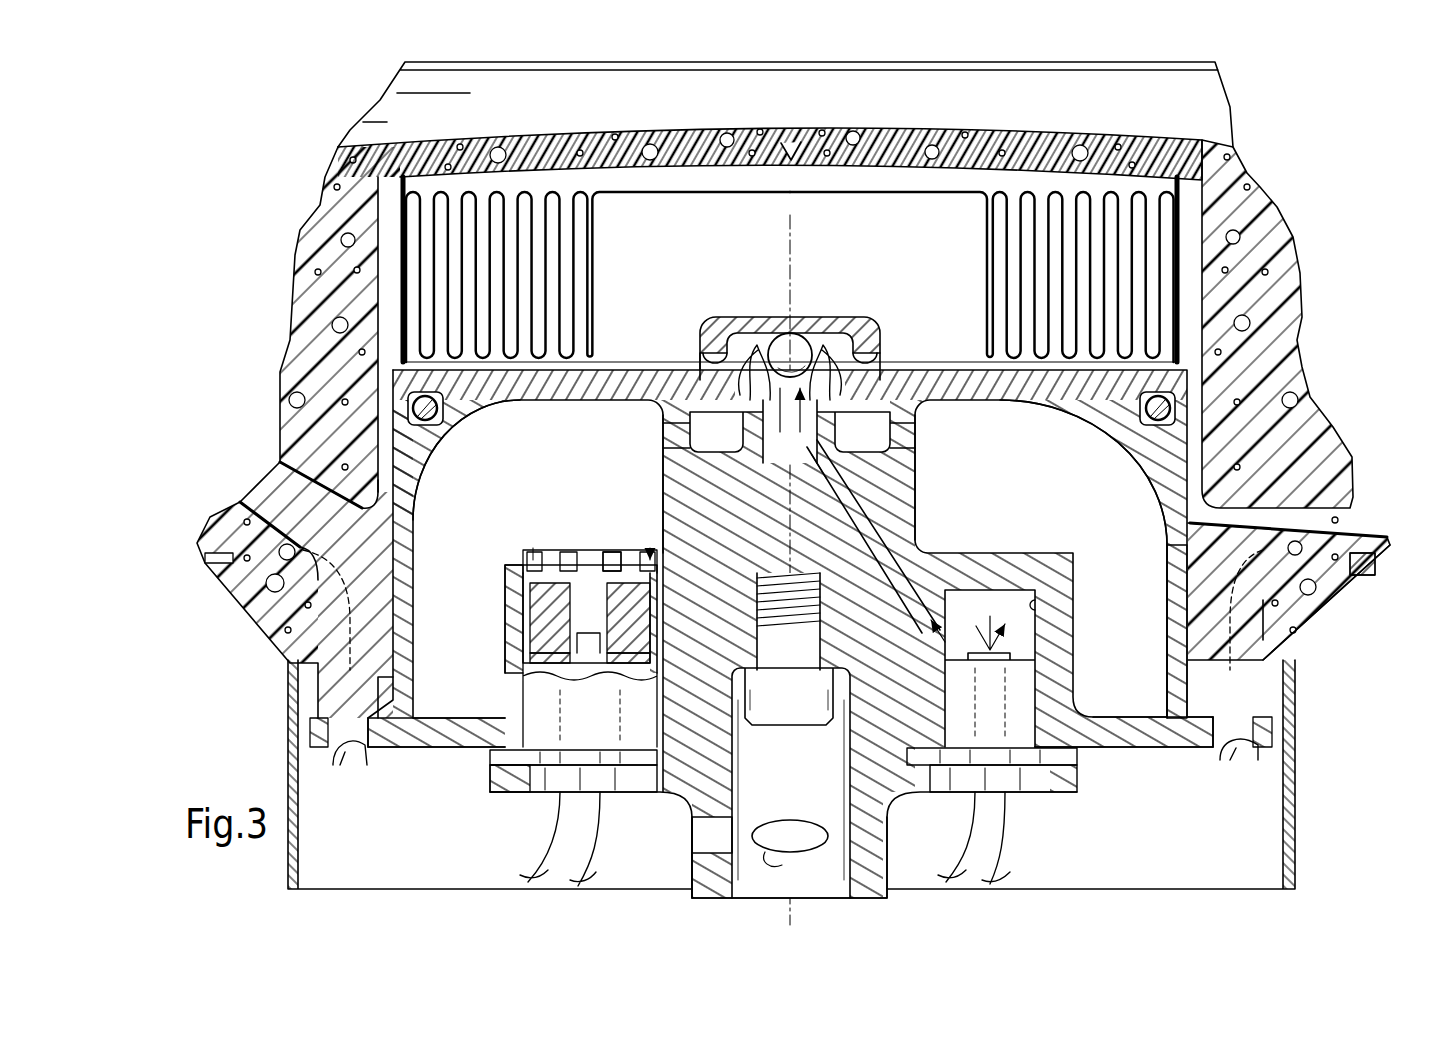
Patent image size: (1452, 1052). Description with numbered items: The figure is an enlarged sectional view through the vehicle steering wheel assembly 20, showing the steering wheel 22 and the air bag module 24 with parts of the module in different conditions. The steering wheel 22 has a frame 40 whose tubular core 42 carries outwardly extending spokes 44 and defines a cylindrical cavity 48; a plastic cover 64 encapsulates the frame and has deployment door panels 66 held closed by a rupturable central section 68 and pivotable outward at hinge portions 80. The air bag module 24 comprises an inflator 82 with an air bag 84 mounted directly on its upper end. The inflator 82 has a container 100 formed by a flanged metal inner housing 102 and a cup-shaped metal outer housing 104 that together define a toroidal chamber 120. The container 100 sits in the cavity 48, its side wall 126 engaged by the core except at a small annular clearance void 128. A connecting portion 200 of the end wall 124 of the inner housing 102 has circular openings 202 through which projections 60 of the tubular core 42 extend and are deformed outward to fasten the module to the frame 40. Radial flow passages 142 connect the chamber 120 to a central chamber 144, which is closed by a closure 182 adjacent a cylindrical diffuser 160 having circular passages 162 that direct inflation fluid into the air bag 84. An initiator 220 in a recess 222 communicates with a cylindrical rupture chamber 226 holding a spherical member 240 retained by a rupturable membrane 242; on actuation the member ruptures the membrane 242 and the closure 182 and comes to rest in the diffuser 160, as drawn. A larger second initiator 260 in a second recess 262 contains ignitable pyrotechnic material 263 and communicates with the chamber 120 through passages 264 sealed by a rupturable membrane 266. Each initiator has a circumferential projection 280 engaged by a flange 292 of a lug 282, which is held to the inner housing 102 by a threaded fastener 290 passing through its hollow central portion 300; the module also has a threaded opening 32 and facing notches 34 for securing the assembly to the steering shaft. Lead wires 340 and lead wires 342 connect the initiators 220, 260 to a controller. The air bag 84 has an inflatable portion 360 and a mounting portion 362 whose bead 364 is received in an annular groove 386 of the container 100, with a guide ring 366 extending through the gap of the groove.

The vehicle steering wheel assembly 20 is at (1312, 108).
The steering wheel 22 is at (1258, 180).
The air bag module 24 is at (1192, 358).
The threaded opening 32 is at (710, 850).
The facing notches 34 is at (768, 846).
The frame 40 is at (1270, 590).
The tubular core 42 is at (1215, 640).
The spokes 44 is at (283, 495).
The cylindrical cavity 48 is at (390, 485).
The projections 60 is at (330, 755).
The plastic cover 64 is at (315, 212).
The deployment door panels 66 is at (650, 135).
The rupturable central section 68 is at (797, 148).
The hinge portions 80 is at (385, 150).
The inflator 82 is at (1190, 525).
The inflatable vehicle occupant protection device 84 is at (1180, 257).
The container 100 is at (385, 705).
The flanged metal inner housing 102 is at (1113, 750).
The cup-shaped metal outer housing 104 is at (1192, 452).
The toroidal shaped chamber 120 is at (1045, 526).
The end wall 124 is at (440, 740).
The side wall 126 is at (1372, 562).
The annular clearance void 128 is at (1193, 693).
The radially extending flow passages 142 is at (680, 450).
The central chamber 144 is at (720, 425).
The cylindrical shaped diffuser 160 is at (830, 330).
The circular passages 162 is at (710, 342).
The closure 182 is at (762, 335).
The connecting portion 200 is at (1272, 733).
The circular openings 202 is at (367, 727).
The actuatable initiator 220 is at (1038, 685).
The recess 222 is at (1037, 607).
The cylindrical rupture chamber 226 is at (780, 447).
The spherical member 240 is at (793, 350).
The rupturable membrane 242 is at (880, 410).
The second actuatable initiator 260 is at (520, 680).
The second recess 262 is at (516, 565).
The ignitable pyrotechnic material 263 is at (548, 615).
The passages 264 is at (553, 553).
The rupturable membrane 266 is at (600, 552).
The projection 280 is at (527, 753).
The lug 282 is at (692, 862).
The threaded fastener 290 is at (775, 700).
The flange 292 is at (500, 780).
The hollow central portion 300 is at (840, 860).
The lead wires 340 is at (983, 858).
The lead wires 342 is at (558, 890).
The inflatable portion 360 is at (405, 257).
The mounting portion 362 is at (440, 390).
The bead 364 is at (432, 412).
The guide ring 366 is at (1200, 390).
The annular groove 386 is at (520, 440).